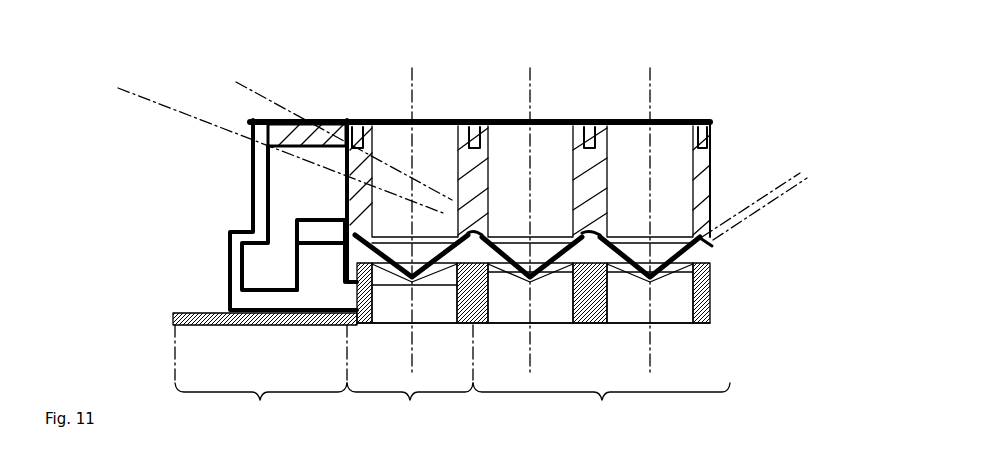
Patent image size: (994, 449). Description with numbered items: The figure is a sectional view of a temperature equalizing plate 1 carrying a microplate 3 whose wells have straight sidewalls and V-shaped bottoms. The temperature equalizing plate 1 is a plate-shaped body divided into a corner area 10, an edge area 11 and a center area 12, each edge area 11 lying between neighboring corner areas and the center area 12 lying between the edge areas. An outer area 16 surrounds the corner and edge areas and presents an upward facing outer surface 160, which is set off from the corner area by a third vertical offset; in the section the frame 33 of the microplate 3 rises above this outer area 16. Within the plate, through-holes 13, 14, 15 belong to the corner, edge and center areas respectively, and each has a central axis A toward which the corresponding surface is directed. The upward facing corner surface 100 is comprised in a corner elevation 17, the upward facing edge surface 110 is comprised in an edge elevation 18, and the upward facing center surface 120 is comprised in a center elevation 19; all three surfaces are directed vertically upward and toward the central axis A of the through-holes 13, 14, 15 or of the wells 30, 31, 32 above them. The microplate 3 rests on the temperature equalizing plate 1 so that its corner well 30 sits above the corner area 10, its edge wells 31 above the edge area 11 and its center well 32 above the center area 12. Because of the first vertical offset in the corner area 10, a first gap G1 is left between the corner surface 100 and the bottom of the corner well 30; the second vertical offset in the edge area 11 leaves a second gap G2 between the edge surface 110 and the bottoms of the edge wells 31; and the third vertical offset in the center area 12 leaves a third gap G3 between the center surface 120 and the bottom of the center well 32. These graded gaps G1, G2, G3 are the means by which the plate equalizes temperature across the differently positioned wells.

The temperature equalizing plate 1 is at (800, 361).
The microplate 3 is at (852, 69).
The corner area 10 is at (410, 379).
The edge area 11 is at (601, 408).
The center area 12 is at (717, 293).
The through-hole 13 is at (397, 314).
The through-hole 14 is at (518, 314).
The through-hole 15 is at (672, 342).
The outer area 16 is at (261, 379).
The corner elevation 17 is at (345, 292).
The edge elevation 18 is at (482, 263).
The center elevation 19 is at (612, 231).
The corner well 30 is at (398, 148).
The edge well 31 is at (510, 148).
The center well 32 is at (682, 106).
The frame 33 is at (250, 216).
The upward facing corner surface 100 is at (300, 262).
The upward facing edge surface 110 is at (718, 243).
The upward facing center surface 120 is at (765, 208).
The upward facing outer surface 160 is at (190, 311).
The central axis A is at (414, 76).
The first gap G1 is at (93, 150).
The second gap G2 is at (213, 140).
The third gap G3 is at (790, 148).